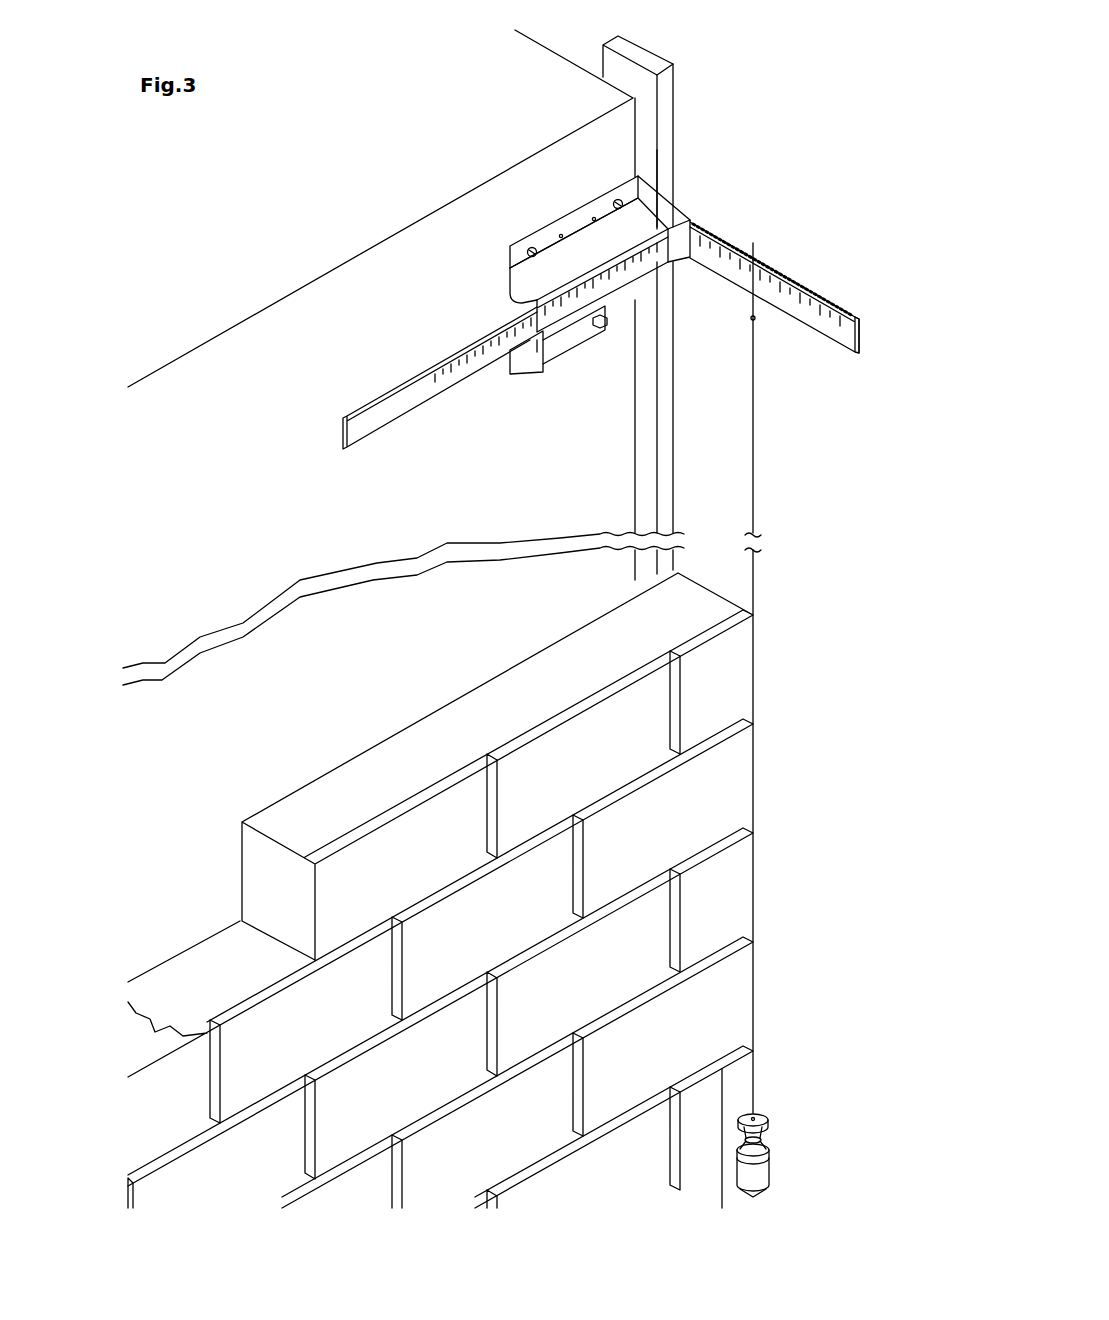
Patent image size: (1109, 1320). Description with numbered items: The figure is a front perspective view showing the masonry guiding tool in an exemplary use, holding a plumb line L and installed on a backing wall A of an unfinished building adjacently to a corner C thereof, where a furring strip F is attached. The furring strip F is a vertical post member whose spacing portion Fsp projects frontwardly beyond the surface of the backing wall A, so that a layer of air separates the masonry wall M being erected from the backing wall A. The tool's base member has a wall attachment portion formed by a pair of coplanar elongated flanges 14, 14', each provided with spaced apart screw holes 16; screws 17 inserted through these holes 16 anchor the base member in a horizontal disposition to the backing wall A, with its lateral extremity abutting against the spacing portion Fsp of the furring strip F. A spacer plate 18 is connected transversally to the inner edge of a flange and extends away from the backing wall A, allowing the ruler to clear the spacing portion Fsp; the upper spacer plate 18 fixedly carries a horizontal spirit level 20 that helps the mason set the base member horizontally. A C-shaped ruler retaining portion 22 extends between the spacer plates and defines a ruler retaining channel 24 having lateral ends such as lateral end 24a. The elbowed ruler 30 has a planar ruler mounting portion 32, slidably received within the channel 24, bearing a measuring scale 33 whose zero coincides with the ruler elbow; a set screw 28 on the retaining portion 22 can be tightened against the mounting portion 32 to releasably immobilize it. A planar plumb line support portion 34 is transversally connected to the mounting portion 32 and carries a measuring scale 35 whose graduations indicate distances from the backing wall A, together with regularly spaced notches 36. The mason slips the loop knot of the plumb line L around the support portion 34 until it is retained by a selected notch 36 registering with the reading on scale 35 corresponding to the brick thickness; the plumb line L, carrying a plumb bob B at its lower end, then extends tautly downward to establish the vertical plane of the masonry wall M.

The backing wall A is at (447, 247).
The corner C is at (617, 130).
The furring strip F is at (623, 70).
The spacing portion of furring strip Fsp is at (645, 137).
The elongated flange 14 is at (572, 227).
The elongated flange 14' is at (530, 371).
The screw holes 16 is at (590, 220).
The screws 17 is at (625, 225).
The spacer plate 18 is at (657, 242).
The horizontal spirit level 20 is at (640, 203).
The ruler retaining portion 22 is at (722, 232).
The ruler retaining channel 24 is at (508, 365).
The lateral end of ruler retaining channel 24a is at (537, 340).
The set screw 28 is at (597, 328).
The elbowed ruler 30 is at (900, 272).
The ruler mounting portion 32 is at (360, 415).
The measuring scale 33 is at (505, 318).
The plumb line support portion 34 is at (852, 332).
The measuring scale 35 is at (754, 245).
The notches 36 is at (812, 285).
The plumb line L is at (762, 470).
The plumb bob B is at (757, 1162).
The masonry wall M is at (710, 790).